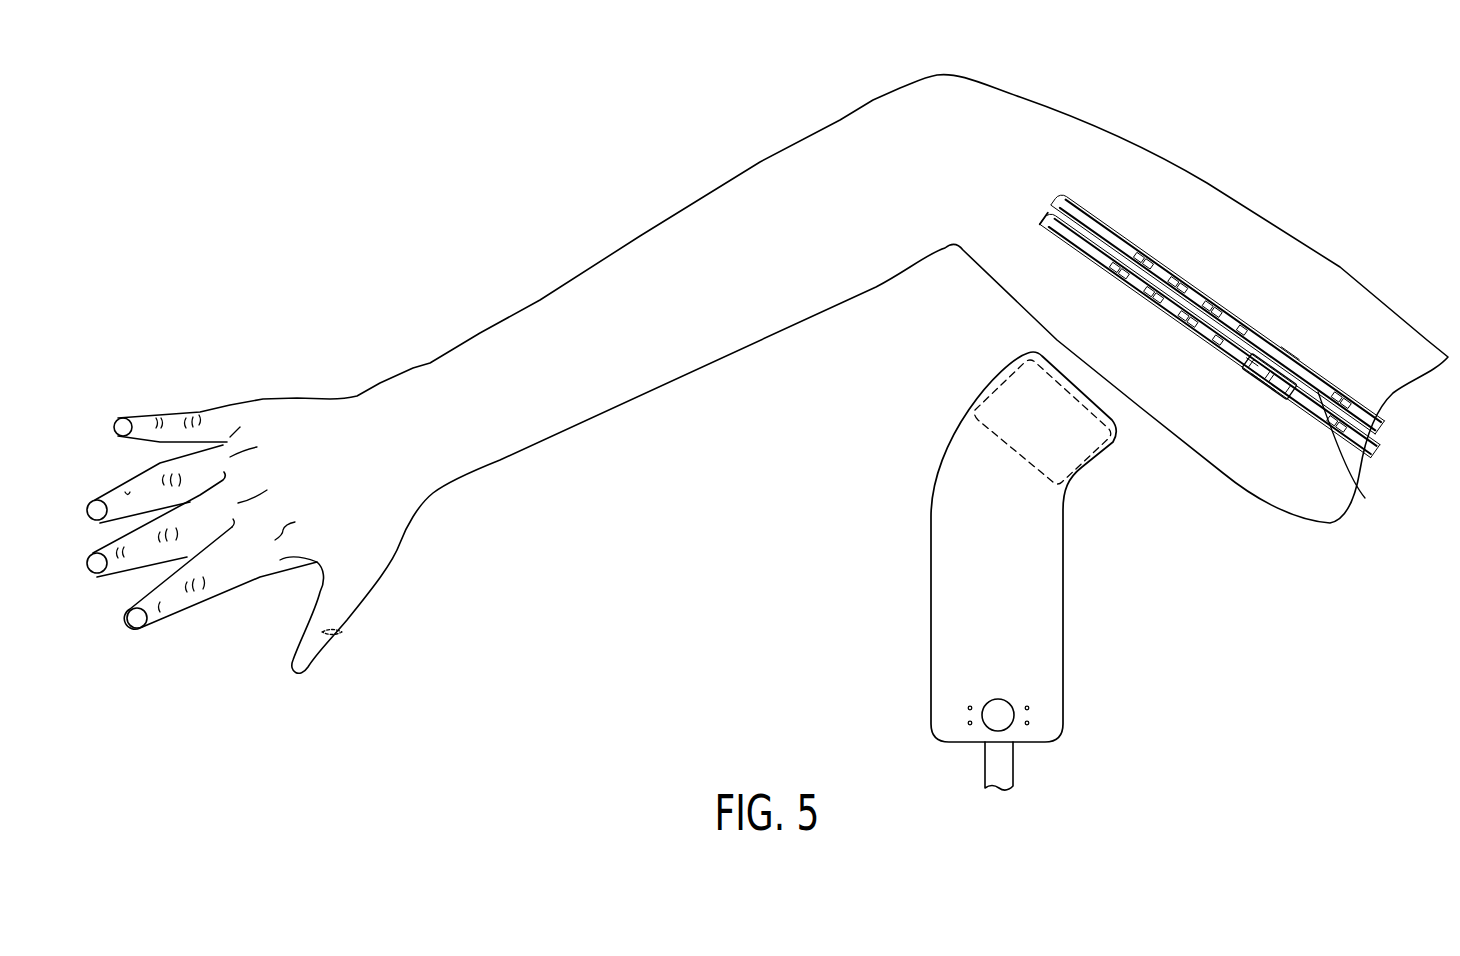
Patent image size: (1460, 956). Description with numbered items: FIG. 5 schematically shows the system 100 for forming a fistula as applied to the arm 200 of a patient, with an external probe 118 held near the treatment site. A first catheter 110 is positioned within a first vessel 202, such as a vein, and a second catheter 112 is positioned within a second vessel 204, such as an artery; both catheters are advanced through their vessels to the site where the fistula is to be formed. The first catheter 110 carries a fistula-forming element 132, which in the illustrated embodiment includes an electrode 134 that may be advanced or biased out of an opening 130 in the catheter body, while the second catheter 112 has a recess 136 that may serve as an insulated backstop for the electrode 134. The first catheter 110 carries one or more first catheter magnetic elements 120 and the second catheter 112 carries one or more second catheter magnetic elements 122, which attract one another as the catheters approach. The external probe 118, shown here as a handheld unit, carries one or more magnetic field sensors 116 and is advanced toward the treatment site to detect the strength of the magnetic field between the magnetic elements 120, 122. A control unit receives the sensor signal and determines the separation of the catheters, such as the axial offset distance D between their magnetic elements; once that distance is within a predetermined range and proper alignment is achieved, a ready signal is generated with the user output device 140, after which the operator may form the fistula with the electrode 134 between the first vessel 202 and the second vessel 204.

The system 100 is at (1181, 289).
The first catheter 110 is at (1181, 289).
The second catheter 112 is at (1046, 238).
The magnetic field sensor 116 is at (1186, 287).
The external probe 118 is at (966, 571).
The first catheter magnetic element 120 is at (1228, 314).
The second catheter magnetic element 122 is at (1205, 326).
The opening 130 is at (1274, 322).
The fistula-forming element 132 is at (1288, 334).
The electrode 134 is at (1312, 350).
The recess 136 is at (1262, 373).
The user output device 140 is at (1016, 712).
The arm 200 is at (557, 206).
The first vessel 202 is at (1296, 345).
The second vessel 204 is at (1254, 358).
The axial offset distance D is at (1365, 498).